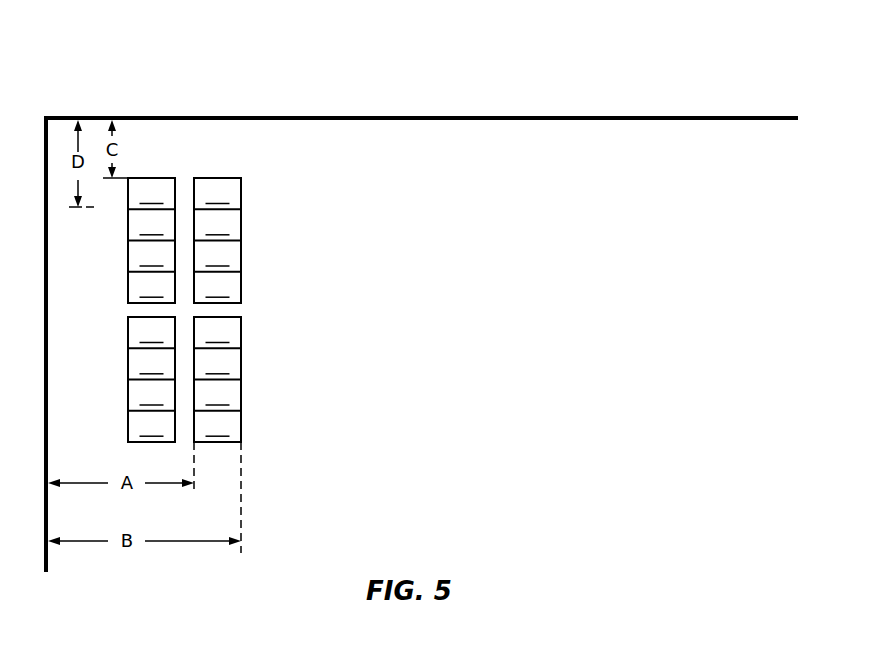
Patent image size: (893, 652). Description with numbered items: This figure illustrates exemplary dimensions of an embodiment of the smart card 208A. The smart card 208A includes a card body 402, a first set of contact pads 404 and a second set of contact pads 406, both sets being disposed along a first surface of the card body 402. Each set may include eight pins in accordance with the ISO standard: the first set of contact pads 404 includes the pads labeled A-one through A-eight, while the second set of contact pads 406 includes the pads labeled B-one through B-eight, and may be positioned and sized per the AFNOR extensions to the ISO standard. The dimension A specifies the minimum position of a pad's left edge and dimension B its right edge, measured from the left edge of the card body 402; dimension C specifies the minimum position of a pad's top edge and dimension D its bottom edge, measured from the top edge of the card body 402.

The smart card 208A is at (662, 66).
The card body 402 is at (514, 117).
The first set of contact pads 404 is at (264, 245).
The second set of contact pads 406 is at (271, 390).